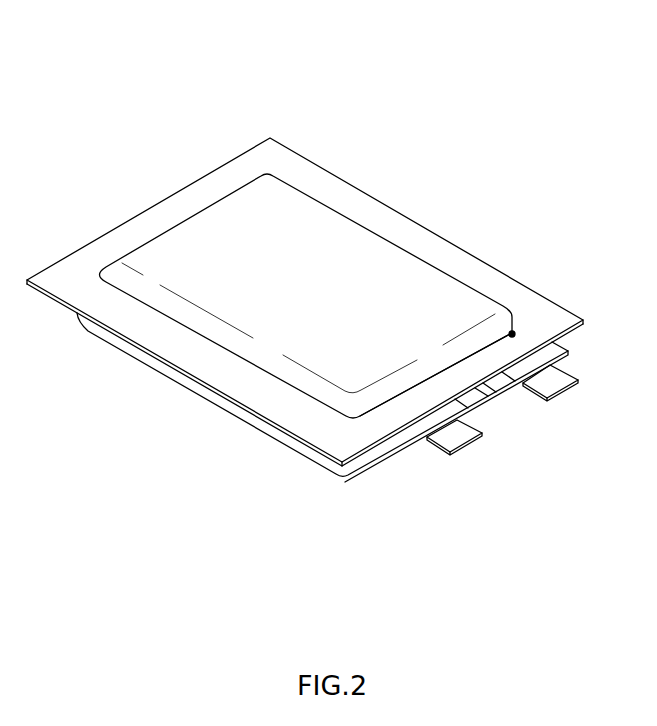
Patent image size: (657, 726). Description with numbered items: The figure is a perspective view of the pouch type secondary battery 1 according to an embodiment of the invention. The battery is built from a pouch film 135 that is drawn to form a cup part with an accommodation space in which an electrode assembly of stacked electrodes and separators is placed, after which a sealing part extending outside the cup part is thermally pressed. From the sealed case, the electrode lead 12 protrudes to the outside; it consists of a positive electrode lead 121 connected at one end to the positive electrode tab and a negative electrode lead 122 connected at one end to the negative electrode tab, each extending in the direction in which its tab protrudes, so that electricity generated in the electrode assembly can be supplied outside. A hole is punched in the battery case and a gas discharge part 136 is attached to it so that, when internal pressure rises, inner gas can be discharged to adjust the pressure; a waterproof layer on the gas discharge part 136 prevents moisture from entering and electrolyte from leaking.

The pouch type secondary battery 1 is at (328, 286).
The electrode lead 12 is at (525, 449).
The positive electrode lead 121 is at (553, 413).
The negative electrode lead 122 is at (462, 438).
The pouch film 135 is at (503, 340).
The gas discharge part 136 is at (515, 334).